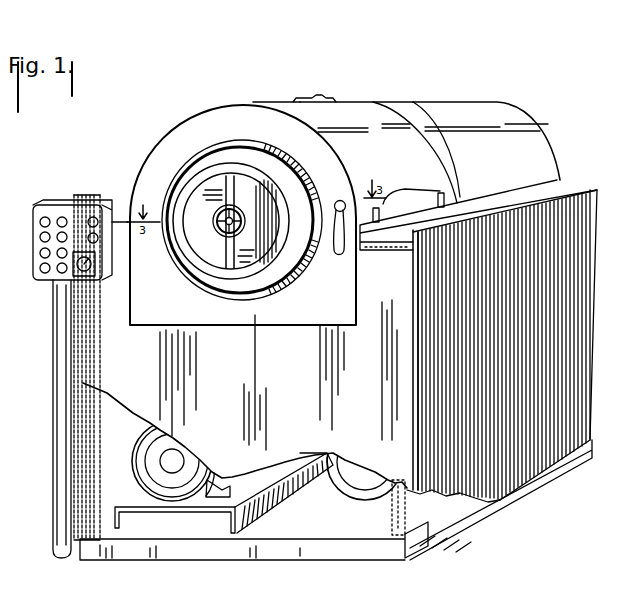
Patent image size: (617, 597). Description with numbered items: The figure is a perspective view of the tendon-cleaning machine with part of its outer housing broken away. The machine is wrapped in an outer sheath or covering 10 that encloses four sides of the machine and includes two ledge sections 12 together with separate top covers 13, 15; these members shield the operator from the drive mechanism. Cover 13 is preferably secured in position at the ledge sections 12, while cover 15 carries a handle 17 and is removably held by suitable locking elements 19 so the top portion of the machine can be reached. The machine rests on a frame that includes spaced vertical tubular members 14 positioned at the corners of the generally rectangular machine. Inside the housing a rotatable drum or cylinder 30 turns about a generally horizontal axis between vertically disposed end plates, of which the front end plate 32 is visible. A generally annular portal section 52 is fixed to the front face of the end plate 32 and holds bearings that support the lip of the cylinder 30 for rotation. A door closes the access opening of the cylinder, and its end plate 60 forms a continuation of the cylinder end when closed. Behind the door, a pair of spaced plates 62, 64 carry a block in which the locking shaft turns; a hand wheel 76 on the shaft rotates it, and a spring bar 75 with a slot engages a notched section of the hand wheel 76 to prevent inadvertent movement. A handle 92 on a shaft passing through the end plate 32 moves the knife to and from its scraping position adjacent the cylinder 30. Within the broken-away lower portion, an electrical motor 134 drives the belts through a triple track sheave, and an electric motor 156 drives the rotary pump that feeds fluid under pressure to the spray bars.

The outer sheath or covering 10 is at (563, 440).
The ledge sections 12 is at (128, 217).
The top cover 13 is at (442, 113).
The vertical tubular members 14 is at (400, 533).
The top cover 15 is at (350, 112).
The handle 17 is at (330, 78).
The locking elements 19 is at (394, 205).
The rotatable drum or cylinder 30 is at (33, 215).
The end plate 32 is at (217, 115).
The annular portal section 52 is at (250, 153).
The end plate of door 60 is at (270, 210).
The spaced plate 62 is at (222, 258).
The spaced plate 64 is at (252, 260).
The spring bar 75 is at (210, 182).
The hand wheel 76 is at (220, 232).
The handle 92 is at (344, 257).
The electrical motor 134 is at (355, 465).
The electric motor 156 is at (170, 445).